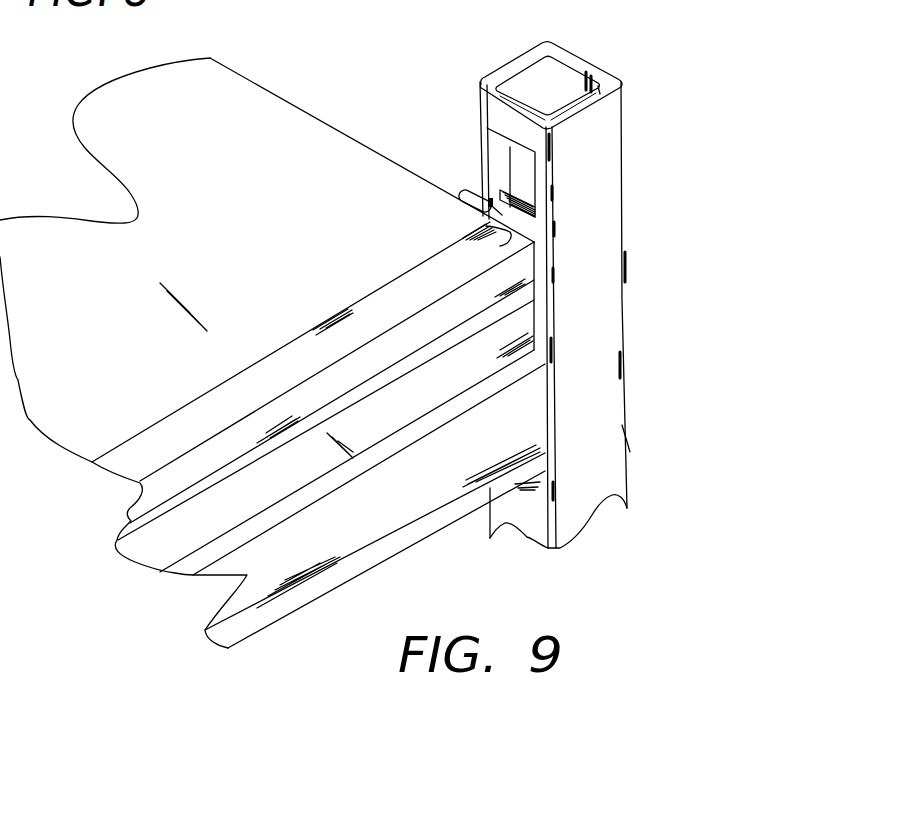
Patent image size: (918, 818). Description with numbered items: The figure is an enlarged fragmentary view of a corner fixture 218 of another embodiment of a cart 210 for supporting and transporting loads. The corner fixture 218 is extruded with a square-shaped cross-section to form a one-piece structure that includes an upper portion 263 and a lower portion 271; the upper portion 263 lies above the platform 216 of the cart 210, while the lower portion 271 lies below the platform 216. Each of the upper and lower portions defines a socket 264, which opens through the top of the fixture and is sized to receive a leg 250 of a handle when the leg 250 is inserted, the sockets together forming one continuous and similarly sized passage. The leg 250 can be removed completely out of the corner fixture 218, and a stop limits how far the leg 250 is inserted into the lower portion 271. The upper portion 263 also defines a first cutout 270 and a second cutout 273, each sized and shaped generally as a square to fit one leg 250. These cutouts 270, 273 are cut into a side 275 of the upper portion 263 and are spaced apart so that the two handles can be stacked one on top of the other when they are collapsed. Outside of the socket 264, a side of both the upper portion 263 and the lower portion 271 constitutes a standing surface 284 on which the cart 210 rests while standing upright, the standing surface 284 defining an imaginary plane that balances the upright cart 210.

The cart 210 is at (439, 82).
The platform 216 is at (313, 113).
The corner fixture 218 is at (623, 176).
The leg 250 is at (272, 375).
The upper portion 263 is at (606, 122).
The socket 264 is at (563, 70).
The first cutout 270 is at (515, 140).
The lower portion 271 is at (613, 447).
The second cutout 273 is at (478, 229).
The side 275 is at (462, 197).
The standing surface 284 is at (623, 256).